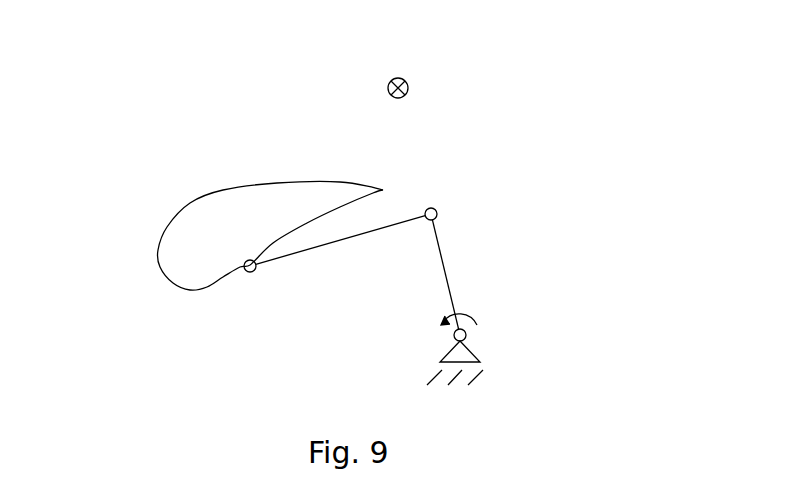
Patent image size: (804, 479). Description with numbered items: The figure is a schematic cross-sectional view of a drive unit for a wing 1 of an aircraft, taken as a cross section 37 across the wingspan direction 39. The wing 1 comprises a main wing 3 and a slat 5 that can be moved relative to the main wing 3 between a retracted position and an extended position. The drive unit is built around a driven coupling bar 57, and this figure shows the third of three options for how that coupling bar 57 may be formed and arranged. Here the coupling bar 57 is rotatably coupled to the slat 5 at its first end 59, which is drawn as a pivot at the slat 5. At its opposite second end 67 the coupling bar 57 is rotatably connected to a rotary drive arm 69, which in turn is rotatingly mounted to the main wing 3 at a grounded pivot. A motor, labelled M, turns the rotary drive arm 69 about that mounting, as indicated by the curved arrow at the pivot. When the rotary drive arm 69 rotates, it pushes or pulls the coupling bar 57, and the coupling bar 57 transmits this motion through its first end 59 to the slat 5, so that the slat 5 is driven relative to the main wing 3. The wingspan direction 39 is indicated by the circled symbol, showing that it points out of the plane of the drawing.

The wing 1 is at (306, 117).
The main wing 3 is at (507, 237).
The slat 5 is at (222, 245).
The cross section 37 is at (151, 156).
The wingspan direction 39 is at (410, 88).
The coupling bar 57 is at (393, 225).
The first end 59 is at (253, 273).
The second end 67 is at (426, 220).
The rotary drive arm 69 is at (447, 274).
The motor M is at (460, 338).